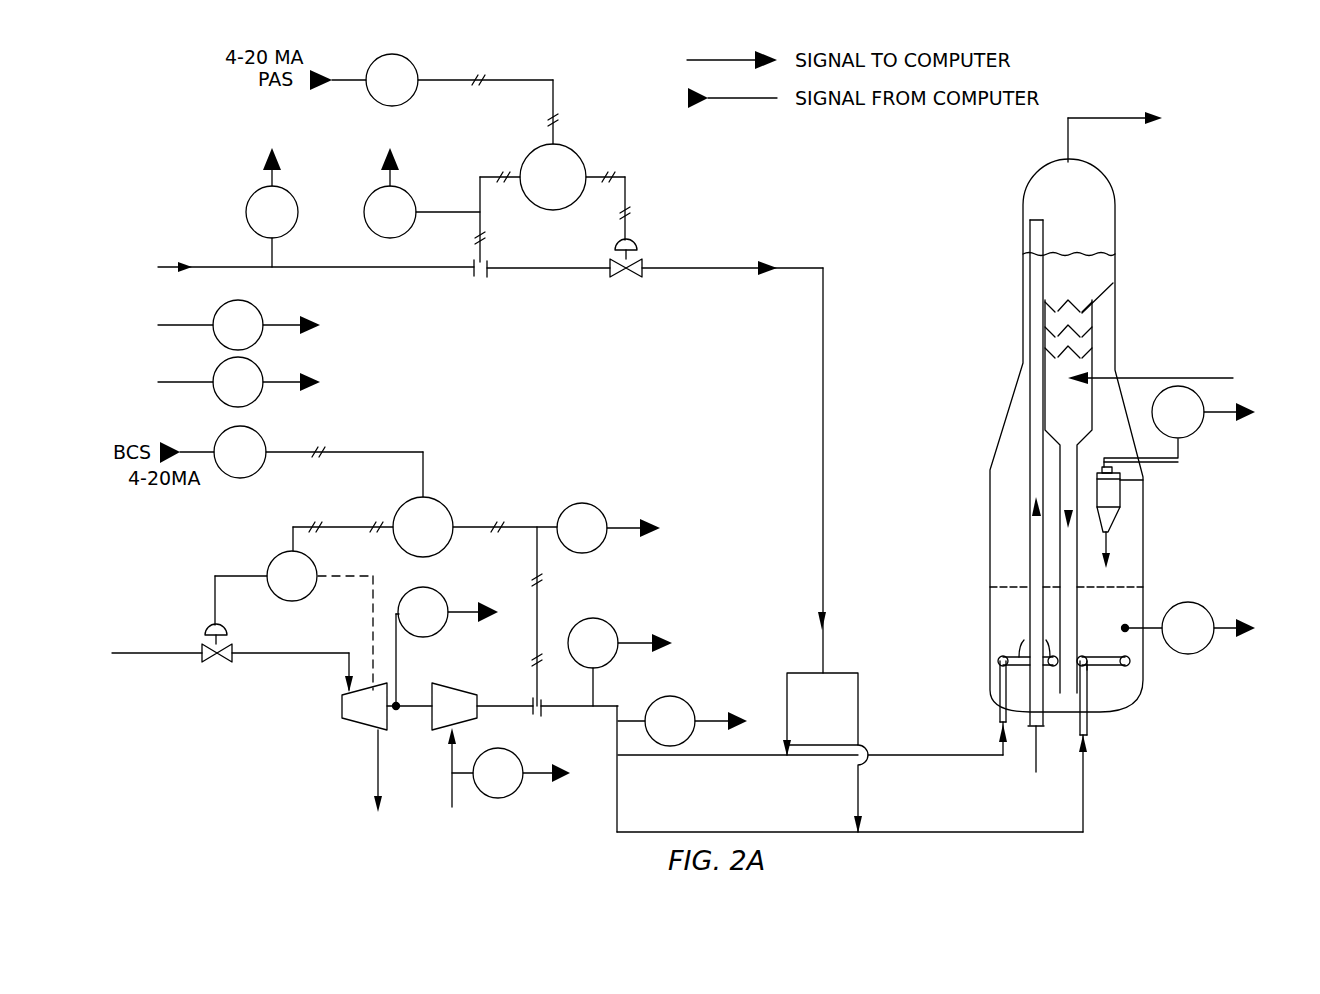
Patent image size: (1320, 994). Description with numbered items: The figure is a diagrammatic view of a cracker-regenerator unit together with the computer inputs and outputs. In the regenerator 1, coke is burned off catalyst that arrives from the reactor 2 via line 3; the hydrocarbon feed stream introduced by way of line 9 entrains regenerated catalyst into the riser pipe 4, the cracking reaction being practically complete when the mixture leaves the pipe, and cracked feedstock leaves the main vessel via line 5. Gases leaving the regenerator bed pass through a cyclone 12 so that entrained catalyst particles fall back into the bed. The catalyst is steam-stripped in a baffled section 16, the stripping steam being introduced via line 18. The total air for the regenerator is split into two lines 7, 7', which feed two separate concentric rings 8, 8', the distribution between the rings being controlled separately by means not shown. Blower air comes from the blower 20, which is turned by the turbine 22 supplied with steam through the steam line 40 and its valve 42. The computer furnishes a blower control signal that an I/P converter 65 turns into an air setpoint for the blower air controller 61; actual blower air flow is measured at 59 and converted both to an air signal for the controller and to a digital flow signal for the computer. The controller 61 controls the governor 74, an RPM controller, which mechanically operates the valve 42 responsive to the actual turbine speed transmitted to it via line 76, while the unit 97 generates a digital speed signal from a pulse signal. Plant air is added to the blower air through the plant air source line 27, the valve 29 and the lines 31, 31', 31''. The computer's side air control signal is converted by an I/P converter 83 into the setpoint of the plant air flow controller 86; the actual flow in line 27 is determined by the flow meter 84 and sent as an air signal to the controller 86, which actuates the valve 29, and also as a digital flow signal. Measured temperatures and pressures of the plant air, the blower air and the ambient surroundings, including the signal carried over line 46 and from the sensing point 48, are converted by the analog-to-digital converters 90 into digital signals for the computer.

The regenerator 1 is at (1152, 657).
The reactor 2 is at (1135, 253).
The line 3 is at (1068, 548).
The riser pipe 4 is at (1030, 355).
The line 5 is at (1085, 116).
The air line 7 is at (812, 708).
The air line 7' is at (852, 746).
The concentric ring 8 is at (1081, 670).
The concentric ring 8' is at (1099, 689).
The line 9 is at (1042, 730).
The cyclone 12 is at (1120, 492).
The baffled section 16 is at (1092, 309).
The line 18 is at (1150, 377).
The blower 20 is at (477, 694).
The turbine 22 is at (340, 710).
The plant air source line 27 is at (208, 263).
The valve 29 is at (645, 264).
The line 31 is at (734, 456).
The line 31' is at (795, 713).
The line 31'' is at (888, 753).
The steam line 40 is at (160, 656).
The valve 42 is at (226, 660).
The signal line 46 is at (1163, 463).
The temperature sensing point 48 is at (1123, 624).
The flow measurement point 59 is at (545, 712).
The blower air controller 61 is at (445, 504).
The I/P converter 65 is at (262, 437).
The governor 74 is at (311, 563).
The line 76 is at (344, 580).
The current to pressure converter 83 is at (411, 63).
The flow meter 84 is at (487, 264).
The plant air flow controller 86 is at (586, 160).
The analog-to-digital converter 90 is at (295, 196).
The unit 97 is at (446, 600).